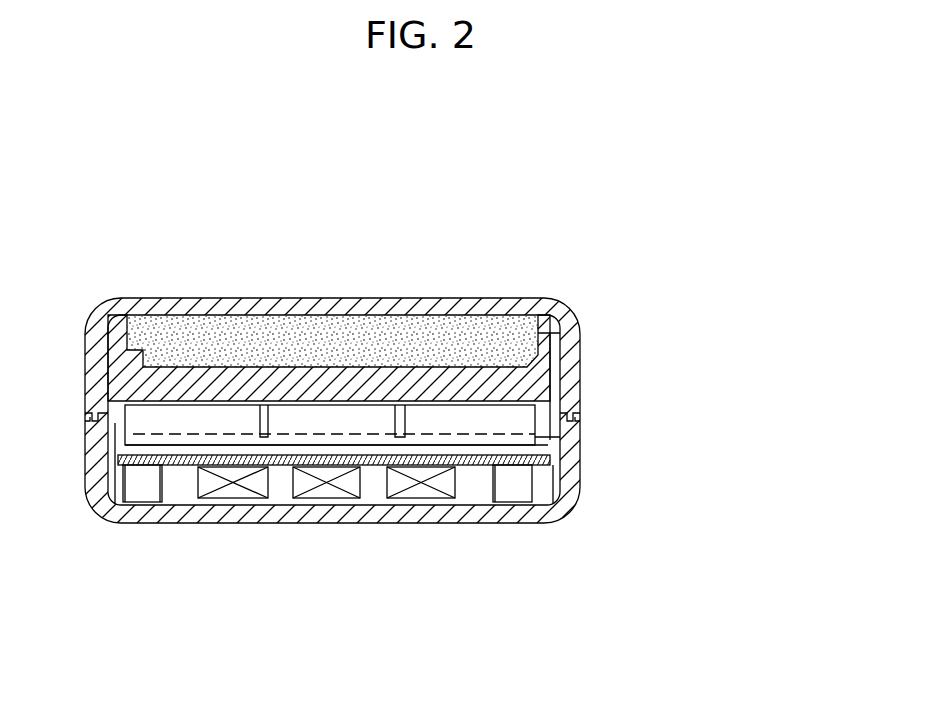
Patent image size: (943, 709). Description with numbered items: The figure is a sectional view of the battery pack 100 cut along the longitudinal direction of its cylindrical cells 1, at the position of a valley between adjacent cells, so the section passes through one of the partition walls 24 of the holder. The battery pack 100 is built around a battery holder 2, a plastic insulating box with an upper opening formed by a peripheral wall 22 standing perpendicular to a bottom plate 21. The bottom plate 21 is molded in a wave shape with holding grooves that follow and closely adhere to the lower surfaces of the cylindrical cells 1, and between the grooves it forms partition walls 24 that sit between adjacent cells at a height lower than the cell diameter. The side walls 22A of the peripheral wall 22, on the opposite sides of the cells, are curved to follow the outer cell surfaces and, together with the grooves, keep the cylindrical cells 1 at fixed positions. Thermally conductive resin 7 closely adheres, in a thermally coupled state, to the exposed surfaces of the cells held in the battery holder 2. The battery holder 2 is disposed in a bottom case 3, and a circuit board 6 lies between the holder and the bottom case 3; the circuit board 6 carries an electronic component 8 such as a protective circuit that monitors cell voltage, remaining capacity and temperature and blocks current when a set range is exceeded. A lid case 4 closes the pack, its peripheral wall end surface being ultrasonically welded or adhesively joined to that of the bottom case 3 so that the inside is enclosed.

The battery pack 100 is at (673, 234).
The cylindrical cell 1 is at (193, 450).
The battery holder 2 is at (637, 128).
The bottom case 3 is at (360, 517).
The lid case 4 is at (338, 300).
The circuit board 6 is at (288, 462).
The thermally conductive resin 7 is at (213, 333).
The electronic component 8 is at (417, 490).
The bottom plate 21 is at (300, 420).
The peripheral wall 22 is at (332, 417).
The side wall 22A is at (120, 330).
The partition wall 24 is at (418, 377).